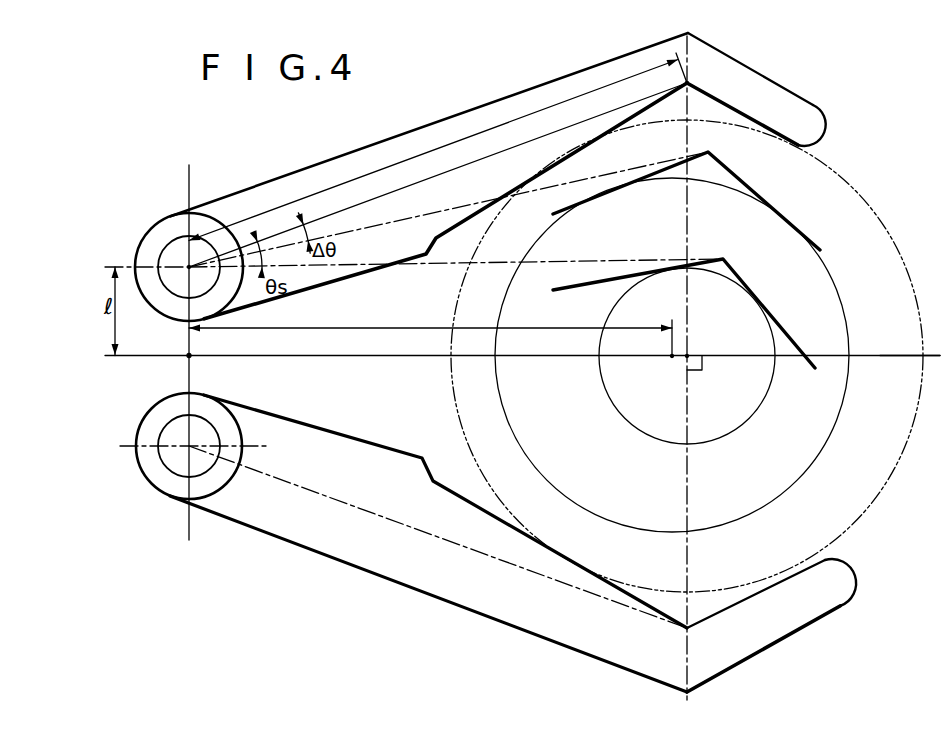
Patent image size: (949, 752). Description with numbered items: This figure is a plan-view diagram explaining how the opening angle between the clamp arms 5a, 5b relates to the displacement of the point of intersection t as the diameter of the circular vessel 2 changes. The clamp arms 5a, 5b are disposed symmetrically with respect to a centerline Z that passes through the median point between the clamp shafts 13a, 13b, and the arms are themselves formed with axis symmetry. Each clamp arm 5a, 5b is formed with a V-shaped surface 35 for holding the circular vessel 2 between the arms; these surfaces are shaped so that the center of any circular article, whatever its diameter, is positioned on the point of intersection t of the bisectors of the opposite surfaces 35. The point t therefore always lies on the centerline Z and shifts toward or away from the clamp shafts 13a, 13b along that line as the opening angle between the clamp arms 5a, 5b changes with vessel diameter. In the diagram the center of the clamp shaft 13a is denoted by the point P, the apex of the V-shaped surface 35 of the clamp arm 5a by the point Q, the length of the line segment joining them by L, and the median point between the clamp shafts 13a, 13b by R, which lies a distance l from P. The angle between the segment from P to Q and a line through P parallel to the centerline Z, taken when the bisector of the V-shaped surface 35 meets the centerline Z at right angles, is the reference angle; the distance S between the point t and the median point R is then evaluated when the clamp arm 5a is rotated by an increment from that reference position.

The clamp shaft 13a is at (172, 248).
The clamp shaft 13b is at (175, 462).
The clamp arm 5a is at (793, 93).
The clamp arm 5b is at (797, 630).
The V-shaped surface 35 is at (712, 100).
The circular vessel 2 is at (835, 432).
The center point of clamp shaft P is at (189, 267).
The apex of V-shaped surface Q is at (687, 83).
The median point between clamp shafts R is at (189, 356).
The distance between point t and median point R S is at (430, 328).
The length of line segment PQ L is at (438, 147).
The point of intersection t is at (680, 360).
The centerline Z is at (888, 355).